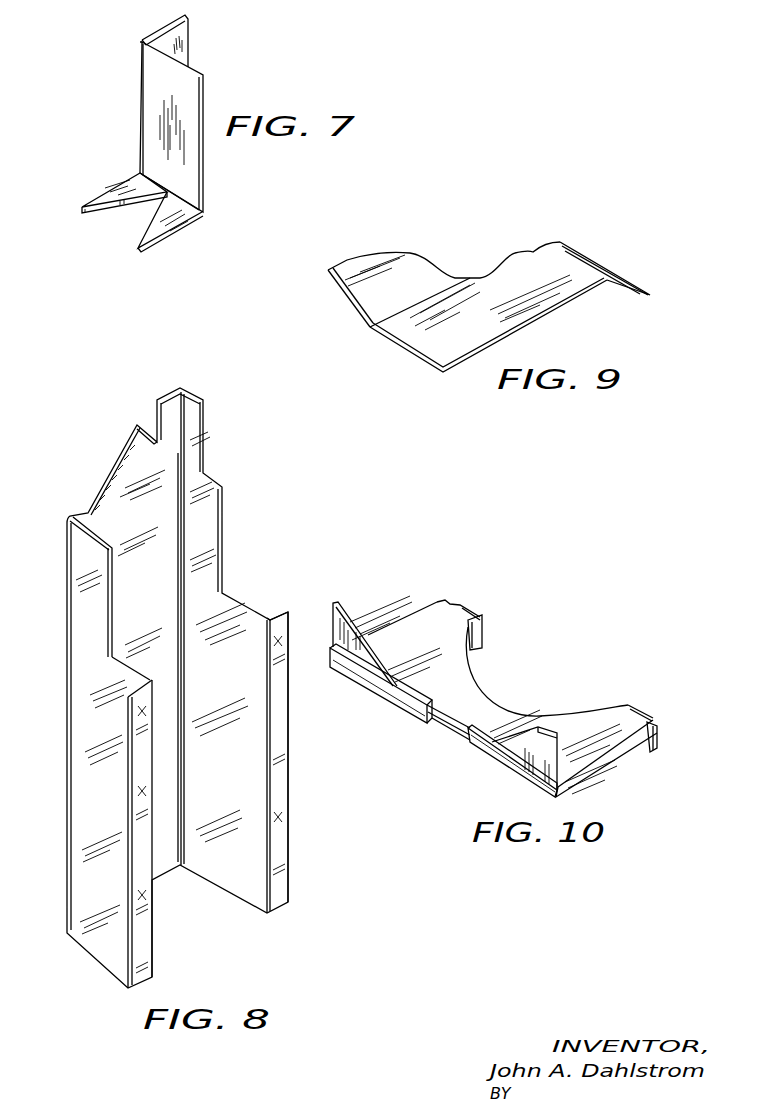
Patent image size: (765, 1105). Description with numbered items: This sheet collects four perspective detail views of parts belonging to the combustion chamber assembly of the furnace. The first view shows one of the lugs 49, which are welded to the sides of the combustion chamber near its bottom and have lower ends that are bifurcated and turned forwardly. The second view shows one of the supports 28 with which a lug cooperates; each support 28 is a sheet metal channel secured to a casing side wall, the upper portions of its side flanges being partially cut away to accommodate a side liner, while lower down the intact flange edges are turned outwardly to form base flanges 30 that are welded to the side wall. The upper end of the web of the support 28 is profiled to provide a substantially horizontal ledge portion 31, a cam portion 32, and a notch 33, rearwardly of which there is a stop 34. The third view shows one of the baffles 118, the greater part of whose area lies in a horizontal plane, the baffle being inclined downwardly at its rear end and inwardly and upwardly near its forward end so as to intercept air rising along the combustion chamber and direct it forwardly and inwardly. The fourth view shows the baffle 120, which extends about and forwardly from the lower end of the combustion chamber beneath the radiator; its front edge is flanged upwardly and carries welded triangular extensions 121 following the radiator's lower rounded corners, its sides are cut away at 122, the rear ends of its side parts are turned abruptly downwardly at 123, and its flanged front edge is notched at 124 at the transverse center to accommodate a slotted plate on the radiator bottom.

In FIG. 7, the lug 49 is at (148, 117).
In FIG. 9, the baffle 118 is at (483, 280).
In FIG. 8, the support 28 is at (228, 533).
In FIG. 8, the base flange 30 is at (140, 830).
In FIG. 8, the ledge portion 31 is at (78, 510).
In FIG. 8, the cam portion 32 is at (118, 448).
In FIG. 8, the notch 33 is at (150, 423).
In FIG. 8, the stop 34 is at (175, 423).
In FIG. 10, the baffle 120 is at (500, 707).
In FIG. 10, the triangular extension 121 is at (363, 655).
In FIG. 10, the cut-away 122 is at (450, 603).
In FIG. 10, the downwardly turned rear end 123 is at (485, 630).
In FIG. 10, the notch 124 is at (435, 723).